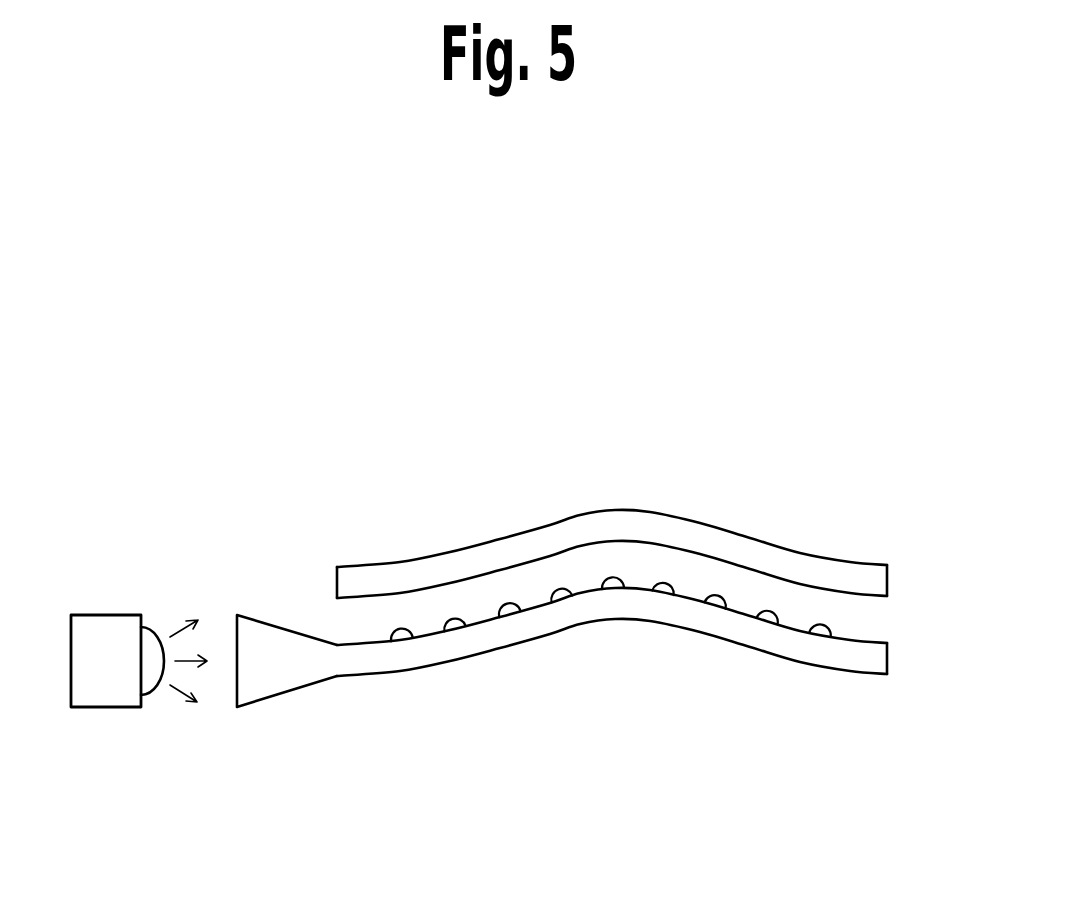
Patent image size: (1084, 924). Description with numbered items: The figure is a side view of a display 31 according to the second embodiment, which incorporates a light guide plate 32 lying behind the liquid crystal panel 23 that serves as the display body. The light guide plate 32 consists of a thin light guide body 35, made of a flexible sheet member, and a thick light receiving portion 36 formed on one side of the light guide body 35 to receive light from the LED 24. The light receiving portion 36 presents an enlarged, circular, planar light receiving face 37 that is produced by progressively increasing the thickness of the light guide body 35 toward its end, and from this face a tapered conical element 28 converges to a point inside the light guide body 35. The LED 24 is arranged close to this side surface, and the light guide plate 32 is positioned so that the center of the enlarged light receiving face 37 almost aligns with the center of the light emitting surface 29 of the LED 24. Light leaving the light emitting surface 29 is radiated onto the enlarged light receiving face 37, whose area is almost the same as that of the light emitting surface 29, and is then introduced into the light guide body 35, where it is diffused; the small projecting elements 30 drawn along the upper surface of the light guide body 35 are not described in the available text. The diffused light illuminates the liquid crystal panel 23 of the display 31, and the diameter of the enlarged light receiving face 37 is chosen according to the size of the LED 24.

The liquid crystal panel 23 is at (613, 522).
The LED 24 is at (103, 702).
The light incident portion 28 is at (282, 628).
The light emitting surface 29 is at (150, 700).
The light reflecting elements 30 is at (680, 582).
The display 31 is at (857, 522).
The light guide plate 32 is at (593, 623).
The light guide body 35 is at (862, 642).
The light receiving portion 36 is at (227, 700).
The enlarged light receiving face 37 is at (235, 633).